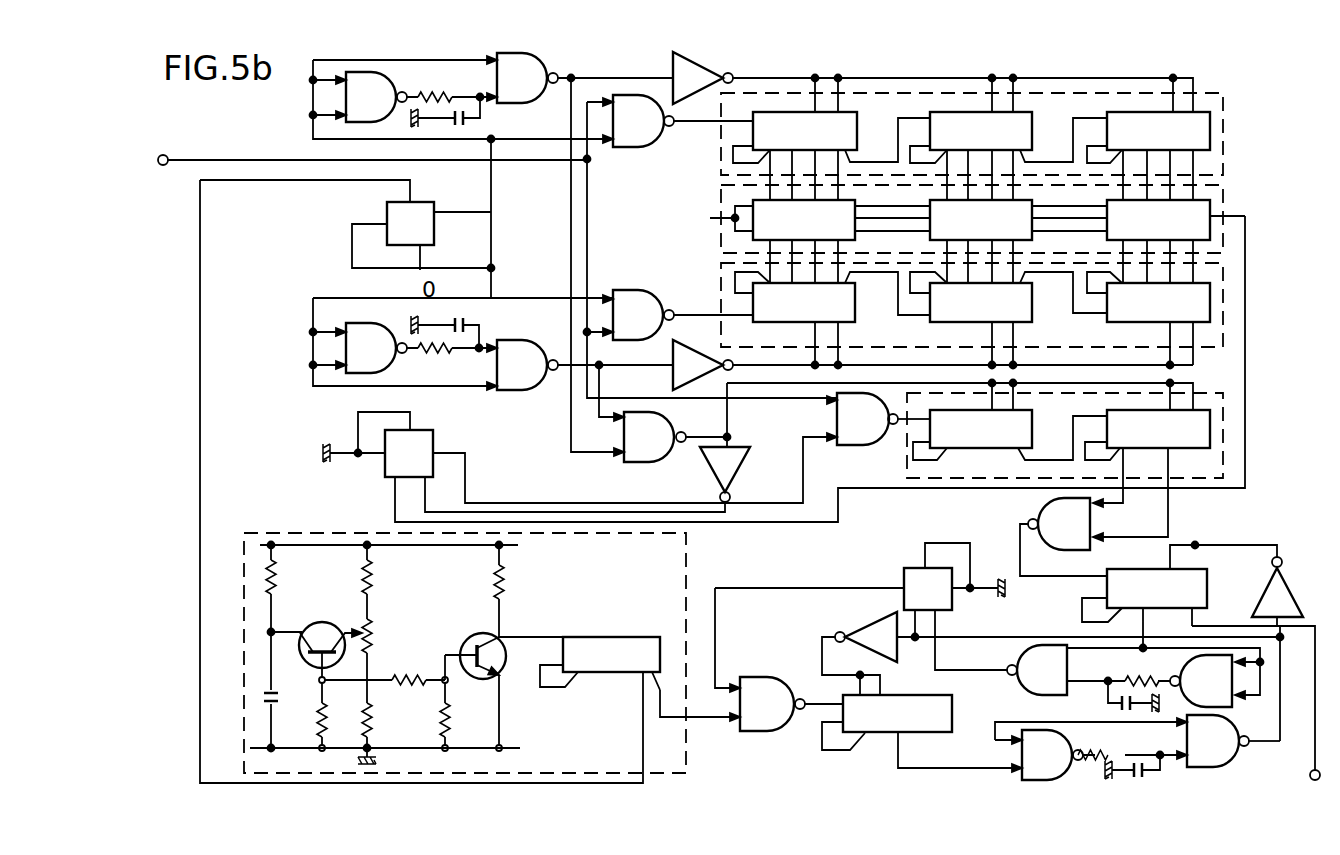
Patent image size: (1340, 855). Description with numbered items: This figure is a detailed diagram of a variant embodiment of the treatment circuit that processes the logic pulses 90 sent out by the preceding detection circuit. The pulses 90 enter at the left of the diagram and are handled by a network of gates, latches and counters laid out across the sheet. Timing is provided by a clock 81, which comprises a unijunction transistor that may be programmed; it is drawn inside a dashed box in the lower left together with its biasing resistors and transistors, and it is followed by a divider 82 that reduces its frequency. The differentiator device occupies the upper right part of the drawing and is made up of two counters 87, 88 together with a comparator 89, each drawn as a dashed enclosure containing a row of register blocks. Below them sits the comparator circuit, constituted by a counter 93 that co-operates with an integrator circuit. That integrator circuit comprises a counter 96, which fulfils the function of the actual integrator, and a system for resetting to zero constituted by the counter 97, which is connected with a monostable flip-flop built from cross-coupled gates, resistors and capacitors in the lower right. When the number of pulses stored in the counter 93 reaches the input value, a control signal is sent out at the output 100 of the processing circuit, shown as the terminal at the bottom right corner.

The pulses 90 is at (166, 155).
The clock 81 is at (290, 538).
The divider 82 is at (605, 604).
The counter 87 is at (1220, 135).
The comparator 89 is at (1220, 210).
The counter 88 is at (1213, 330).
The counter 93 is at (1225, 472).
The counter 96 is at (1195, 592).
The counter 97 is at (930, 712).
The output 100 is at (1310, 775).